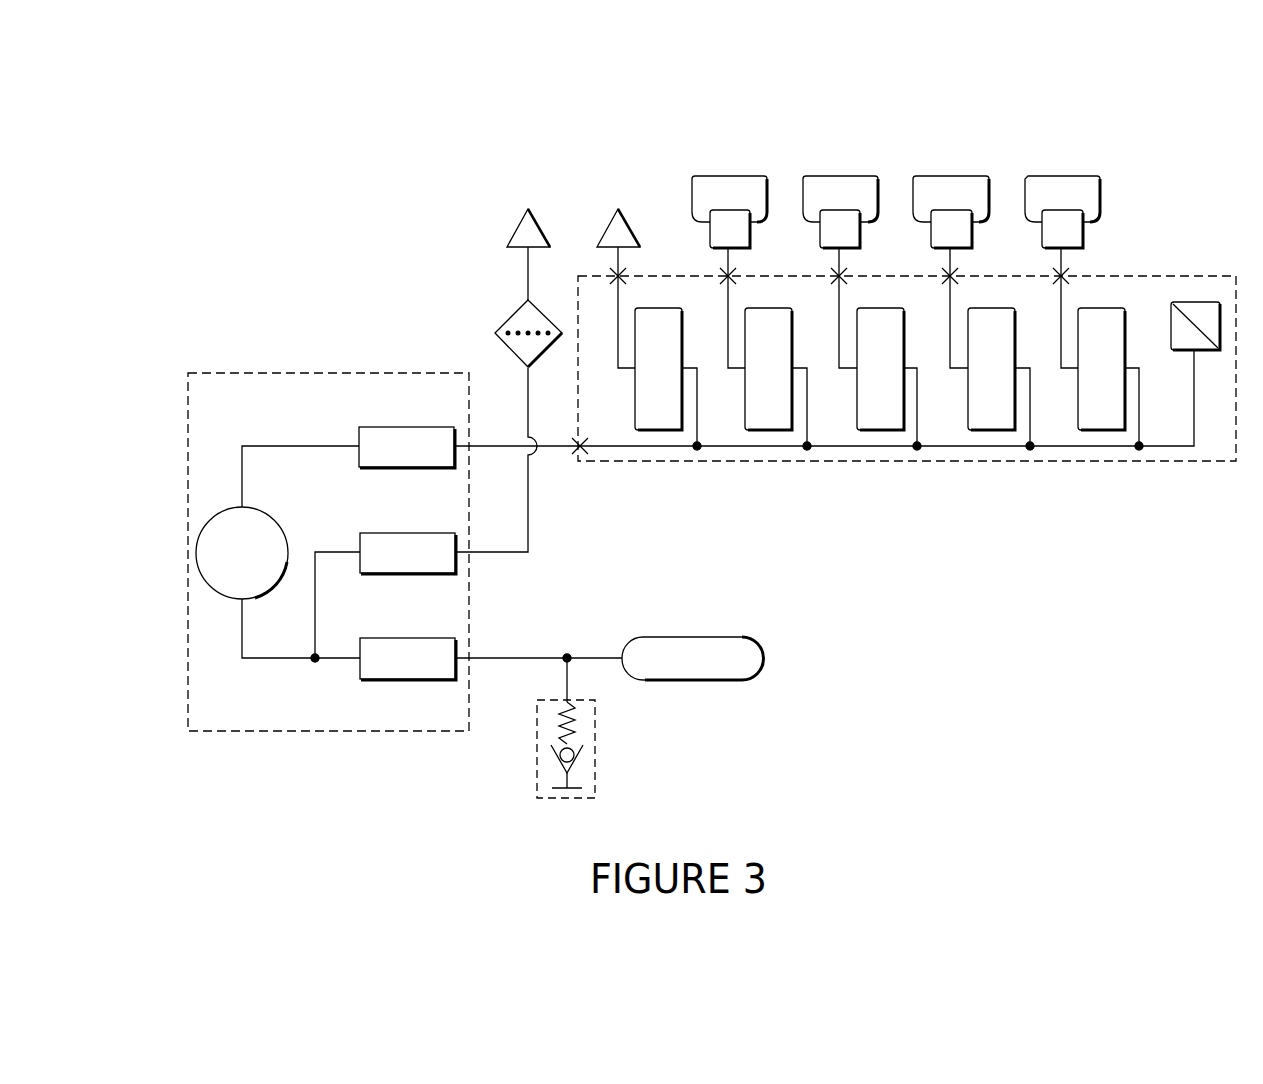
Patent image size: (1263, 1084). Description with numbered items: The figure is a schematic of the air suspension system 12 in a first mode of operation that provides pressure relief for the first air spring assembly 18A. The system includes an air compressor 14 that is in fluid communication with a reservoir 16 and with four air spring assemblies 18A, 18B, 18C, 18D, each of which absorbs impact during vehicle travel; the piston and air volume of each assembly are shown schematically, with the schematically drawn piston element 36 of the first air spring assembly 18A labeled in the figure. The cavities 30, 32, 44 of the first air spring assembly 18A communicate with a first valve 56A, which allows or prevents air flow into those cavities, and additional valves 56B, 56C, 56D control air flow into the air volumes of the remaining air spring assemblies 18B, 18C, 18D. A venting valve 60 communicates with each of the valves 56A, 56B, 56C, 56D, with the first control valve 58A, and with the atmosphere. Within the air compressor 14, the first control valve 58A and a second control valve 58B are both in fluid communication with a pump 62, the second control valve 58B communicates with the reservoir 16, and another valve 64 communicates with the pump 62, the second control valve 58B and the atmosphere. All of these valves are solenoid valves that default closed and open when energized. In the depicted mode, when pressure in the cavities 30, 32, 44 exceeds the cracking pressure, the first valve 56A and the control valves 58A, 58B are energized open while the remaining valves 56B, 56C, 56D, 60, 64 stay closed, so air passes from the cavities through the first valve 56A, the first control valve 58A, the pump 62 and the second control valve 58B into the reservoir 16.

The air suspension system 12 is at (205, 325).
The air compressor 14 is at (250, 748).
The reservoir 16 is at (765, 660).
The first air spring assembly 18A is at (1061, 171).
The second air spring assembly 18B is at (950, 171).
The third air spring assembly 18C is at (840, 171).
The fourth air spring assembly 18D is at (728, 171).
The cavity 30 is at (1119, 199).
The cavity 32 is at (1119, 199).
The cavity 44 is at (1070, 193).
The actuator rod block 36 is at (1084, 231).
The first valve 56A is at (1100, 418).
The valve 56B is at (990, 418).
The valve 56C is at (878, 418).
The valve 56D is at (767, 418).
The first control valve 58A is at (403, 468).
The second control valve 58B is at (404, 682).
The venting valve 60 is at (657, 418).
The pump 62 is at (197, 551).
The valve 64 is at (404, 575).